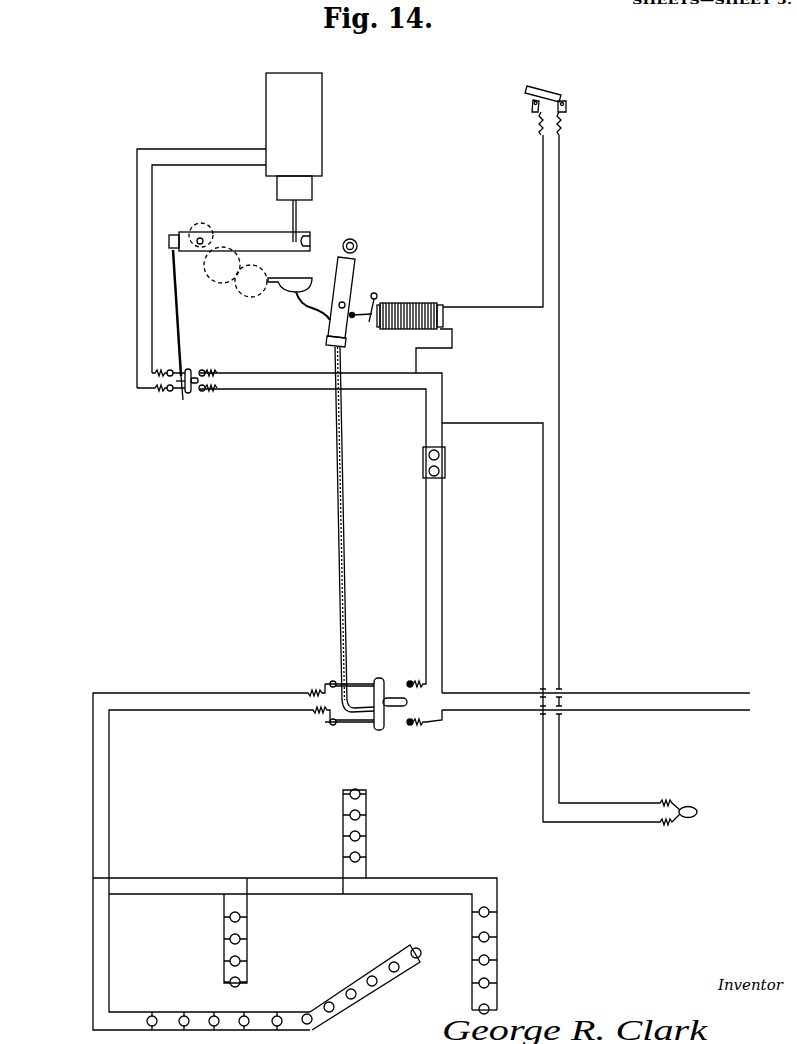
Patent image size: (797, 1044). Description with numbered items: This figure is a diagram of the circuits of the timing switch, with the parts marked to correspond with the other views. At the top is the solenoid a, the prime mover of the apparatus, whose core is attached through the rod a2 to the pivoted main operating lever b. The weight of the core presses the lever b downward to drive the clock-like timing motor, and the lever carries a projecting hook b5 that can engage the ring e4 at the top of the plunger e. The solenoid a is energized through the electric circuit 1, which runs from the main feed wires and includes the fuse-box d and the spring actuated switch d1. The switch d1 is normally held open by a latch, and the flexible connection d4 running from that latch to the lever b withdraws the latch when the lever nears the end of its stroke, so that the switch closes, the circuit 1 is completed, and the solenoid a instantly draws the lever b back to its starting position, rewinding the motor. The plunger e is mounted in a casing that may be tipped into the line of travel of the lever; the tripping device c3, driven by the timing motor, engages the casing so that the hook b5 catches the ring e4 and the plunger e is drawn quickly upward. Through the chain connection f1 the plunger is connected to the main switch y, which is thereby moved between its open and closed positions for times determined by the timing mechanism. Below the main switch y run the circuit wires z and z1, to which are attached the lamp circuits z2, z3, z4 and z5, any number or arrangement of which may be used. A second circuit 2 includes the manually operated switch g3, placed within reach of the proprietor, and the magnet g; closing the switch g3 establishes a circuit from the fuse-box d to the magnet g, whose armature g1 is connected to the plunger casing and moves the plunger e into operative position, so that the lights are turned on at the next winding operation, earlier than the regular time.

The solenoid a is at (305, 137).
The rod a2 is at (296, 215).
The main operating lever b is at (247, 240).
The projecting hook b5 is at (310, 238).
The tripping device c3 is at (294, 286).
The plunger e is at (345, 270).
The ring e4 is at (355, 248).
The magnet g is at (398, 303).
The armature g1 is at (368, 325).
The switch g3 is at (548, 96).
The fuse-box d is at (426, 462).
The spring actuated switch d1 is at (183, 400).
The flexible connection d4 is at (179, 331).
The chain connection f1 is at (340, 504).
The main switch y is at (357, 686).
The circuit z is at (421, 851).
The circuit z1 is at (429, 859).
The lamp circuit z2 is at (335, 841).
The lamp circuit z3 is at (248, 932).
The lamp circuit z4 is at (284, 987).
The lamp circuit z5 is at (497, 960).
The electric circuit 1 is at (290, 421).
The circuit 2 is at (569, 489).